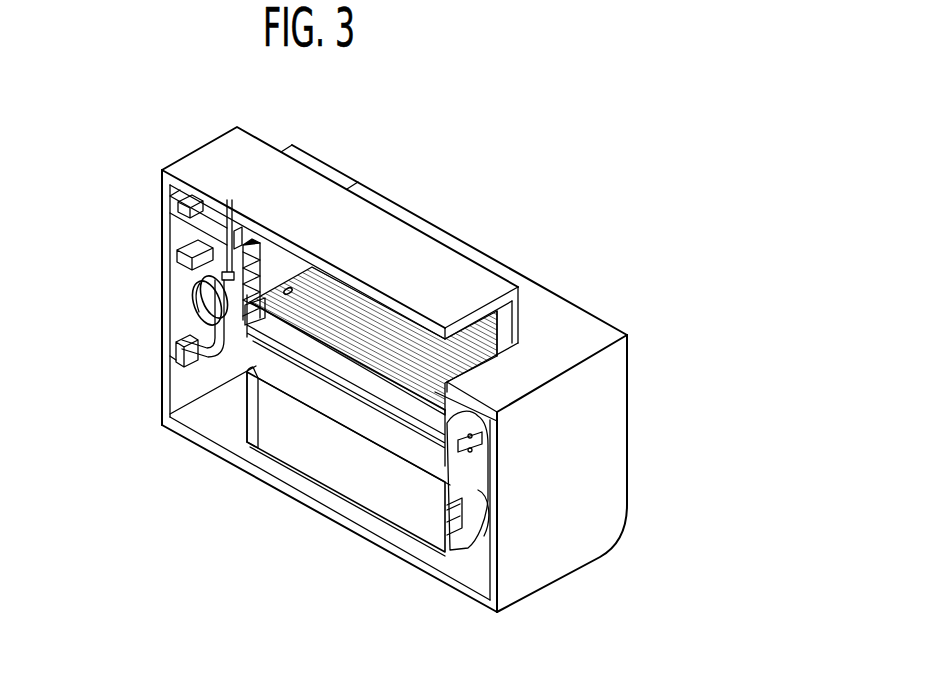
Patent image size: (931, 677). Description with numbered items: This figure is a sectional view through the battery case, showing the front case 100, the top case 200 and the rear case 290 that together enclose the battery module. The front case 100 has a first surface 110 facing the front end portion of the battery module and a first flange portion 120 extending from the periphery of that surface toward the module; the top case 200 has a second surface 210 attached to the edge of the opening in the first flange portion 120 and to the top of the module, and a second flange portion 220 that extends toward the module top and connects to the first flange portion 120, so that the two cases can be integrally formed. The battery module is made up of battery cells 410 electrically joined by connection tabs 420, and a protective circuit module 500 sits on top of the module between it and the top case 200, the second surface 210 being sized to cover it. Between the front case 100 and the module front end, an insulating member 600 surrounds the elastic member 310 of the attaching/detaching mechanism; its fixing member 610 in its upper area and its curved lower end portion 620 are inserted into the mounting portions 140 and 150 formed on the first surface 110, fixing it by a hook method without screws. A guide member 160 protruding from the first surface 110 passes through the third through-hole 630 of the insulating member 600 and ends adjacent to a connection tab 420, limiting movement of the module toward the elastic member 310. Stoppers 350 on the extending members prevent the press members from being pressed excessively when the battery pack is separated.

The front case 100 is at (71, 413).
The first surface 110 is at (182, 400).
The first flange portion 120 is at (197, 420).
The mounting portion 140 is at (160, 208).
The mounting portion 150 is at (168, 360).
The guide member 160 is at (215, 335).
The top case 200 is at (427, 136).
The second surface 210 is at (402, 252).
The second flange portion 220 is at (497, 323).
The rear case 290 is at (533, 577).
The elastic member 310 is at (193, 298).
The stopper 350 is at (175, 258).
The battery cell 410 is at (347, 462).
The connection tab 420 is at (459, 530).
The protective circuit module 500 is at (342, 300).
The insulating member 600 is at (238, 257).
The fixing member 610 is at (173, 228).
The lower fixing member 620 is at (176, 341).
The third through-hole 630 is at (262, 268).